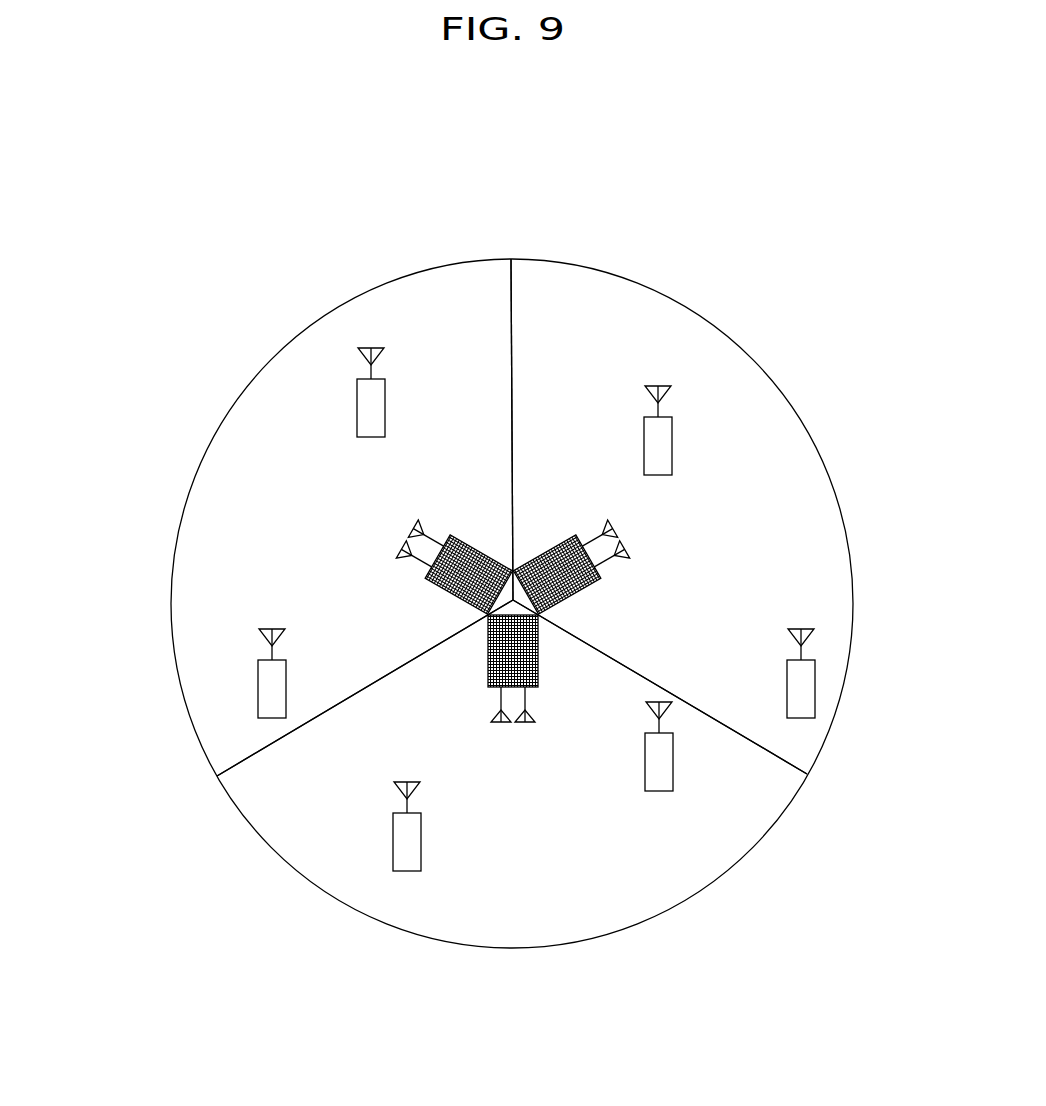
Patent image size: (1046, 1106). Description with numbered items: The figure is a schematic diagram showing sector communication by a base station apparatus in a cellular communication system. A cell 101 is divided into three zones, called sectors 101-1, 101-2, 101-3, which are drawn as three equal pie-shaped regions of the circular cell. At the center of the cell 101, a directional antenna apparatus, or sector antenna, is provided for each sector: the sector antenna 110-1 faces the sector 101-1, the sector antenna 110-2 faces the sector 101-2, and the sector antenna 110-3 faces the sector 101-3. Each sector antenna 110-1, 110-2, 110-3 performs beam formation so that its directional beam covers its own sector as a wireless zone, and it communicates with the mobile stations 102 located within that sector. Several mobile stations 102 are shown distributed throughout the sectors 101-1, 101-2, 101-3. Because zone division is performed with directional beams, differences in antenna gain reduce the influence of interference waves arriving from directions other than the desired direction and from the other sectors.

The cell 101 is at (631, 262).
The sector 101-1 is at (797, 492).
The sector 101-2 is at (550, 923).
The sector 101-3 is at (225, 457).
The sector antenna 110-1 is at (554, 545).
The sector antenna 110-2 is at (490, 680).
The sector antenna 110-3 is at (471, 545).
The mobile station 102 is at (385, 410).